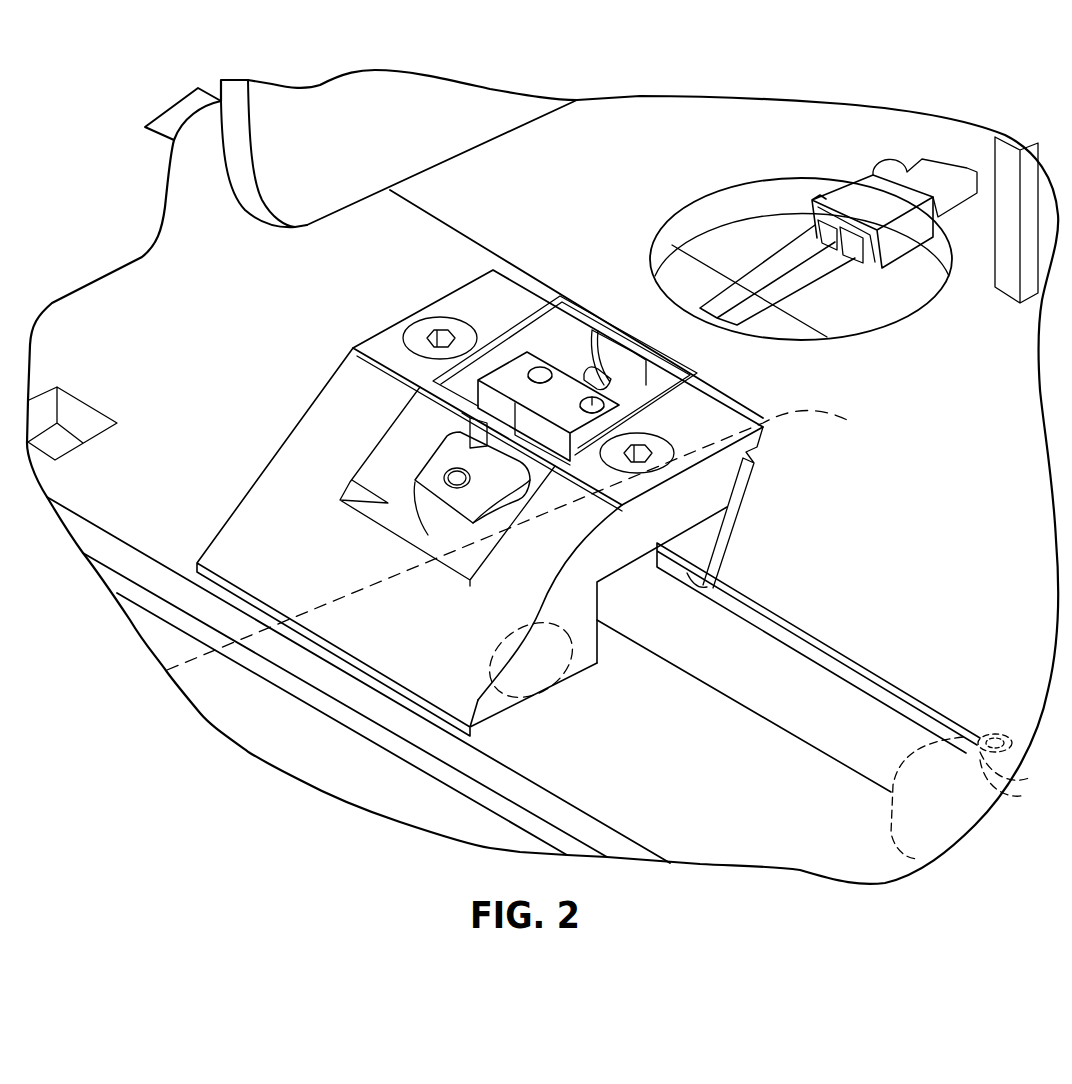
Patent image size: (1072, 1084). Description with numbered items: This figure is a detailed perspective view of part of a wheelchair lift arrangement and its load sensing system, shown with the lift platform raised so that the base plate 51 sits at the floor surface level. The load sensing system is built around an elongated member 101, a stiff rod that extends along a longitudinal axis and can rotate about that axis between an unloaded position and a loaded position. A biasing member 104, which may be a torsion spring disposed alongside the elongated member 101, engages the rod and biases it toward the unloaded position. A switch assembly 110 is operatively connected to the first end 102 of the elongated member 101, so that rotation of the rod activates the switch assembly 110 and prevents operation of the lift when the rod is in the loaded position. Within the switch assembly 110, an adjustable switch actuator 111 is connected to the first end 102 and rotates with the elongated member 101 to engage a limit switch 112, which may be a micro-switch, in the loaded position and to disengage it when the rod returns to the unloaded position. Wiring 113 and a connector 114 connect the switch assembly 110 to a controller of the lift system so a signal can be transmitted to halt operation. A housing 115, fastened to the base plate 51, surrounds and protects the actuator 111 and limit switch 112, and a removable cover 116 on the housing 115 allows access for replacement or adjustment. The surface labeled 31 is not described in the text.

The switch assembly 110 is at (243, 313).
The base plate 51 is at (976, 435).
The lower surface 31 is at (655, 765).
The first end 102 is at (583, 597).
The removable cover 116 is at (497, 360).
The limit switch 112 is at (540, 397).
The adjustable switch actuator 111 is at (437, 500).
The biasing member 104 is at (800, 623).
The elongated member 101 is at (826, 731).
The wiring 113 is at (885, 325).
The connector 114 is at (870, 202).
The housing 115 is at (730, 400).